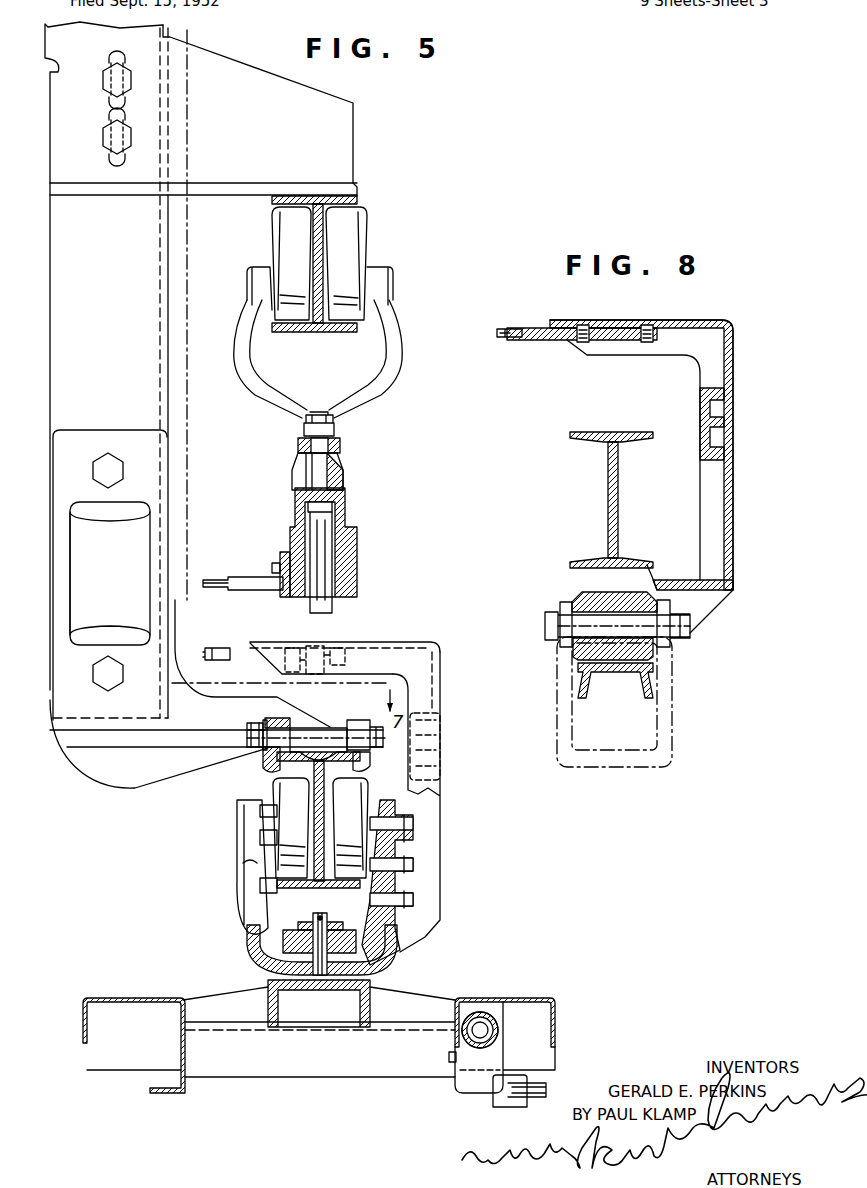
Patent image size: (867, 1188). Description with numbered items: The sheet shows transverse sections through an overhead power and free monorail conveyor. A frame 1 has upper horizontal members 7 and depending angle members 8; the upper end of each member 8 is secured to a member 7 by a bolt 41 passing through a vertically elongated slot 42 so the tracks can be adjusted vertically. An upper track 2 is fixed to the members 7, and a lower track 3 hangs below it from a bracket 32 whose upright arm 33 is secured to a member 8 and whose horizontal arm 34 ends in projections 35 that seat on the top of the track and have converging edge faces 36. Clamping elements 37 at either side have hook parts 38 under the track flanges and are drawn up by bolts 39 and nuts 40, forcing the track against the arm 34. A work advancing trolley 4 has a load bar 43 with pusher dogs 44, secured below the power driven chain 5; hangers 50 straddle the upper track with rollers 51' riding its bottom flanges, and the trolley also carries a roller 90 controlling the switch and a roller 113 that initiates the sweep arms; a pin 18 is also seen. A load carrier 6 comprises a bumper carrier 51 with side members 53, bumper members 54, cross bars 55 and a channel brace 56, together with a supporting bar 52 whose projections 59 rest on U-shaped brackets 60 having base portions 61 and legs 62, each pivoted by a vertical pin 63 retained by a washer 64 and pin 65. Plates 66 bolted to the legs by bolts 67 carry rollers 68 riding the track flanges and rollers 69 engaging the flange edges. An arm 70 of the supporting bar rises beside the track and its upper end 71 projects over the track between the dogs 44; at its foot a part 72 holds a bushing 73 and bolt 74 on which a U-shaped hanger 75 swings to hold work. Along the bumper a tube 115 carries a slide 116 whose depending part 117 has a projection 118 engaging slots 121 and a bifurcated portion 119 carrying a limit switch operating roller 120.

In FIG. 5, the frame 1 is at (297, 139).
In FIG. 5, the upper track 2 is at (362, 200).
In FIG. 5, the lower track 3 is at (303, 889).
In FIG. 8, the lower track 3 is at (620, 530).
In FIG. 5, the work advancing trolley 4 is at (340, 414).
In FIG. 5, the power driven chain 5 is at (346, 447).
In FIG. 5, the load carrier 6 is at (445, 847).
In FIG. 5, the upper horizontal member 7 is at (110, 218).
In FIG. 5, the angle member 8 is at (170, 295).
In FIG. 5, the pivot pin 18 is at (333, 477).
In FIG. 5, the bracket 32 is at (135, 792).
In FIG. 5, the upright arm 33 is at (157, 527).
In FIG. 5, the horizontally extending arm 34 is at (290, 720).
In FIG. 5, the projection 35 is at (323, 735).
In FIG. 5, the edge face 36 is at (296, 732).
In FIG. 5, the clamping element 37 is at (268, 718).
In FIG. 5, the hook part 38 is at (276, 772).
In FIG. 5, the bolt 39 is at (262, 745).
In FIG. 5, the nut 40 is at (246, 727).
In FIG. 5, the bolt 41 is at (108, 76).
In FIG. 5, the vertically elongated slot 42 is at (122, 58).
In FIG. 5, the load bar 43 is at (359, 539).
In FIG. 5, the pusher dog 44 is at (312, 626).
In FIG. 5, the hanger 50 is at (403, 345).
In FIG. 5, the bumper carrier 51 is at (533, 1047).
In FIG. 5, the roller 51' is at (325, 263).
In FIG. 8, the supporting bar 52 is at (576, 590).
In FIG. 5, the side member 53 is at (183, 1060).
In FIG. 5, the bumper member 54 is at (128, 998).
In FIG. 5, the cross bar 55 is at (352, 1063).
In FIG. 5, the brace 56 is at (370, 1020).
In FIG. 8, the brace 56 is at (638, 686).
In FIG. 5, the projection 59 is at (290, 940).
In FIG. 5, the U-shaped bracket 60 is at (399, 971).
In FIG. 5, the base portion 61 is at (300, 985).
In FIG. 5, the leg 62 is at (252, 925).
In FIG. 5, the vertical pin 63 is at (308, 919).
In FIG. 5, the washer 64 is at (334, 928).
In FIG. 5, the pin 65 is at (319, 912).
In FIG. 5, the plate 66 is at (238, 858).
In FIG. 5, the bolt 67 is at (420, 906).
In FIG. 5, the roller 68 is at (300, 819).
In FIG. 5, the roller 69 is at (240, 893).
In FIG. 5, the arm 70 is at (443, 796).
In FIG. 8, the arm 70 is at (733, 532).
In FIG. 5, the upper end 71 is at (397, 645).
In FIG. 8, the upper end 71 is at (640, 348).
In FIG. 8, the part 72 is at (622, 602).
In FIG. 8, the bushing 73 is at (620, 660).
In FIG. 8, the bolt 74 is at (692, 633).
In FIG. 8, the U-shaped hanger 75 is at (674, 672).
In FIG. 5, the roller 90 is at (203, 648).
In FIG. 8, the roller 90 is at (500, 328).
In FIG. 5, the roller 113 is at (205, 578).
In FIG. 5, the tube 115 is at (485, 1034).
In FIG. 5, the slide 116 is at (495, 1038).
In FIG. 5, the depending part 117 is at (478, 1068).
In FIG. 5, the projection 118 is at (452, 1062).
In FIG. 5, the bifurcated portion 119 is at (503, 1107).
In FIG. 5, the limit switch operating roller 120 is at (547, 1091).
In FIG. 5, the slot 121 is at (452, 1050).